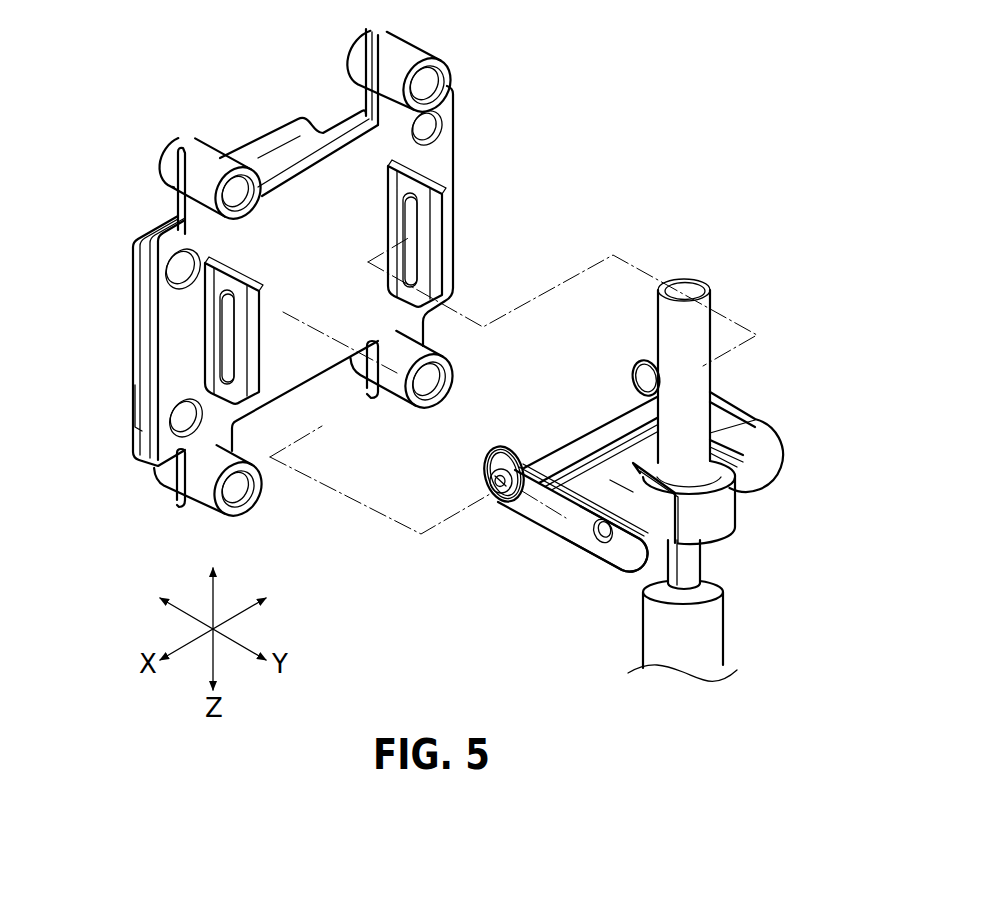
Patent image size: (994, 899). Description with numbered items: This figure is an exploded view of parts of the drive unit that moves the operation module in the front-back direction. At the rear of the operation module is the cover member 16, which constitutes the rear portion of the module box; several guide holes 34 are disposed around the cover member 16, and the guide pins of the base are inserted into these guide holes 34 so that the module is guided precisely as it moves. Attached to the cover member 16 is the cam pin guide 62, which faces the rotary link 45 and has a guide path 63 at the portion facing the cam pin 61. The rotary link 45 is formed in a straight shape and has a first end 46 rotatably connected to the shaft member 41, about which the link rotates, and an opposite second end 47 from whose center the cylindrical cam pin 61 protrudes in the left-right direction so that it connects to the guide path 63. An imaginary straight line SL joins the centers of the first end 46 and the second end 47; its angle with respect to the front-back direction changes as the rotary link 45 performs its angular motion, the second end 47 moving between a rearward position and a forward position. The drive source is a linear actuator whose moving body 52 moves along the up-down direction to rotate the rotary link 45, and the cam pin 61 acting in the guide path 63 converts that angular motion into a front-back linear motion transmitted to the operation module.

The cover member 16 is at (447, 155).
The guide holes 34 is at (437, 82).
The cam pin guide 62 is at (438, 253).
The guide path 63 is at (412, 218).
The rotary link 45 is at (735, 397).
The shaft member 41 is at (600, 537).
The imaginary straight line SL is at (577, 517).
The first end 46 is at (610, 545).
The second end 47 is at (636, 372).
The cam pin 61 is at (492, 497).
The moving body 52 is at (725, 512).